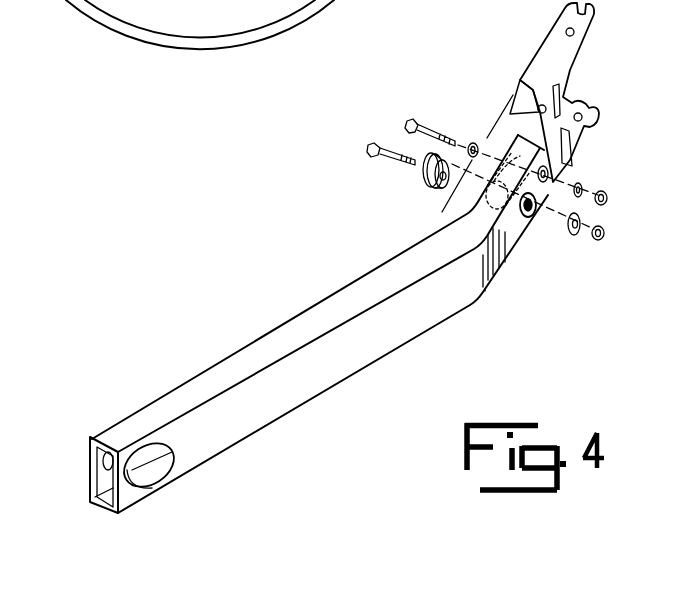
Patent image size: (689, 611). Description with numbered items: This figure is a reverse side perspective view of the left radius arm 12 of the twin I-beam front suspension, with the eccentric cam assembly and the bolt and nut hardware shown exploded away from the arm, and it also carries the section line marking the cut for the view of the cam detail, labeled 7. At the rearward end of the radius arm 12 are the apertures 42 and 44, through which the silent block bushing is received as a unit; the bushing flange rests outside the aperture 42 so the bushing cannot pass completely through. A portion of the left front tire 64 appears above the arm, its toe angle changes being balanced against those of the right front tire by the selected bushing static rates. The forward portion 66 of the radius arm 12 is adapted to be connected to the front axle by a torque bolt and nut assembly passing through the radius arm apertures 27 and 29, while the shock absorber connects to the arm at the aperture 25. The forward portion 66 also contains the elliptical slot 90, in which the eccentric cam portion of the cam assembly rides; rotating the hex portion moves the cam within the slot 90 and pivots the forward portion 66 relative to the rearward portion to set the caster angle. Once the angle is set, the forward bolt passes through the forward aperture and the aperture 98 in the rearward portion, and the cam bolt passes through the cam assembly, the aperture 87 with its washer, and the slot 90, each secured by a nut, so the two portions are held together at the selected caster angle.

The radius arm 12 is at (245, 313).
The aperture 42 is at (142, 489).
The aperture 44 is at (97, 472).
The left front tire 64 is at (86, 15).
The forward portion 66 is at (578, 56).
The radius arm aperture 27 is at (566, 32).
The aperture 25 is at (546, 109).
The radius arm aperture 29 is at (593, 125).
The aperture 87 is at (538, 217).
The elliptical slot 90 is at (530, 227).
The aperture 98 is at (552, 185).
The section line 7- 7 is at (508, 119).